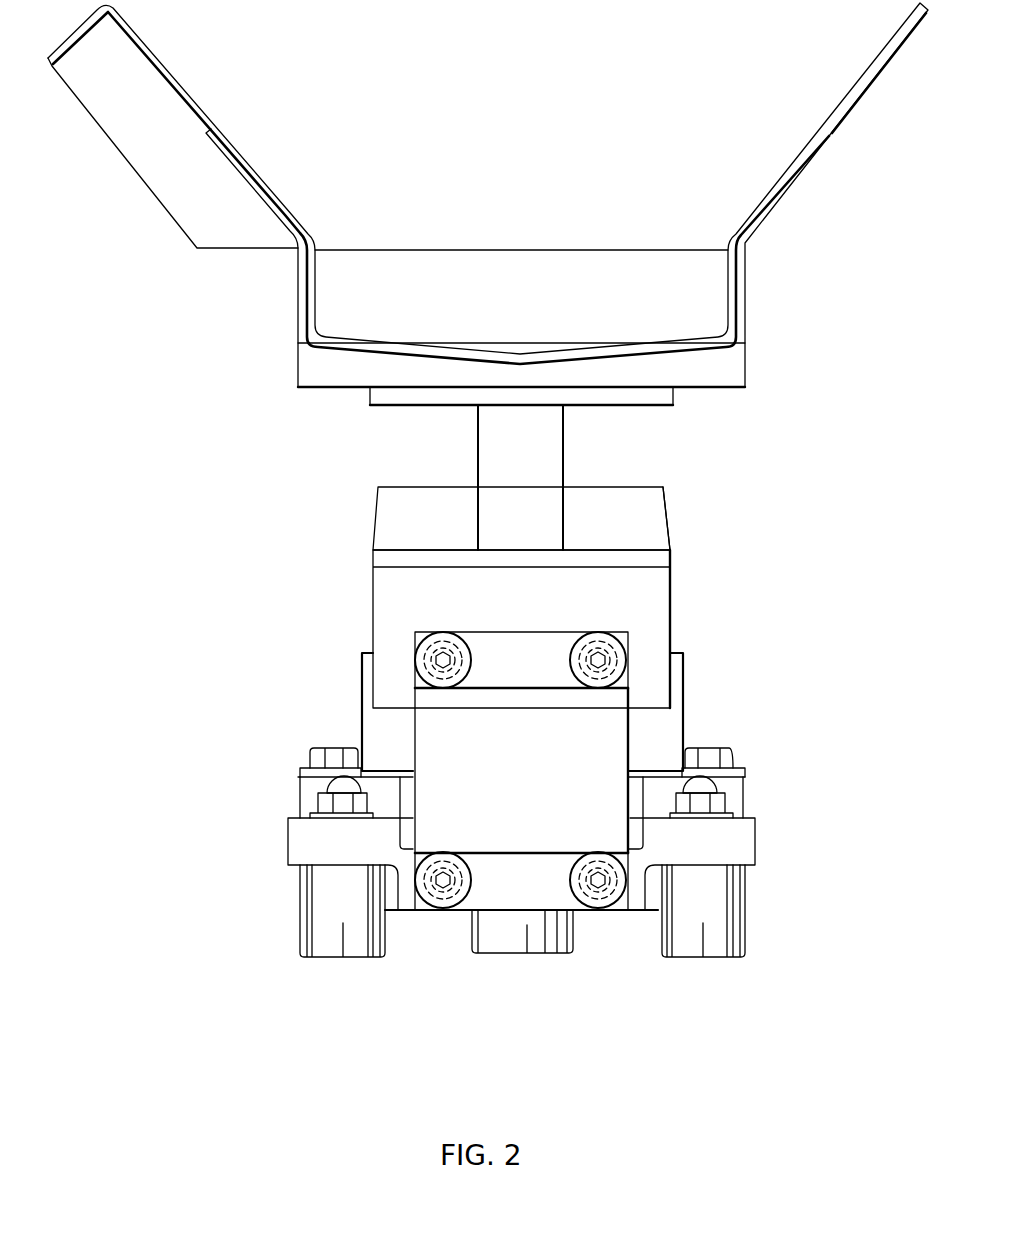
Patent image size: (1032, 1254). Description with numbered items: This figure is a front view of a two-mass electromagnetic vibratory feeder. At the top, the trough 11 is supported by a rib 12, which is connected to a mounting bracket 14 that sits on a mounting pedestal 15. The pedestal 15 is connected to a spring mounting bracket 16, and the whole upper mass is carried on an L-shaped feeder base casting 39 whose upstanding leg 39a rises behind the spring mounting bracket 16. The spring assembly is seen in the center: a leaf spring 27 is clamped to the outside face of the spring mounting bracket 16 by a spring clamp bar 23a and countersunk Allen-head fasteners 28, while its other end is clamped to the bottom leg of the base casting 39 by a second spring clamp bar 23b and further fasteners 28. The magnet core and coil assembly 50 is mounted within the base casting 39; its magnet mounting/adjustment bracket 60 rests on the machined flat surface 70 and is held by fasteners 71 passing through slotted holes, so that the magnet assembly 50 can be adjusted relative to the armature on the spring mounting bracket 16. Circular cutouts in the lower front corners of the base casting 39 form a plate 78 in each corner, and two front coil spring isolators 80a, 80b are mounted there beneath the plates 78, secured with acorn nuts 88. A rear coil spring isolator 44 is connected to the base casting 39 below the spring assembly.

The trough 11 is at (882, 50).
The rib 12 is at (745, 363).
The mounting bracket 14 is at (673, 400).
The mounting pedestal 15 is at (565, 457).
The feeder base casting 39 is at (372, 518).
The upstanding leg of the feeder base casting 39a is at (668, 515).
The spring mounting bracket 16 is at (672, 597).
The magnet core and coil assembly 50 is at (685, 690).
The countersunk Allen-head fasteners 28 is at (587, 633).
The spring clamp bar 23a is at (498, 678).
The leaf spring 27 is at (568, 773).
The second spring clamp bar 23b is at (473, 917).
The fasteners 71 is at (332, 748).
The machined flat surface 70 is at (310, 765).
The acorn nuts 88 is at (303, 783).
The magnet mounting/adjustment bracket 60 is at (740, 768).
The plate 78 is at (296, 840).
The front coil spring isolator 80a is at (300, 913).
The front coil spring isolator 80b is at (745, 917).
The rear coil spring isolator 44 is at (543, 957).